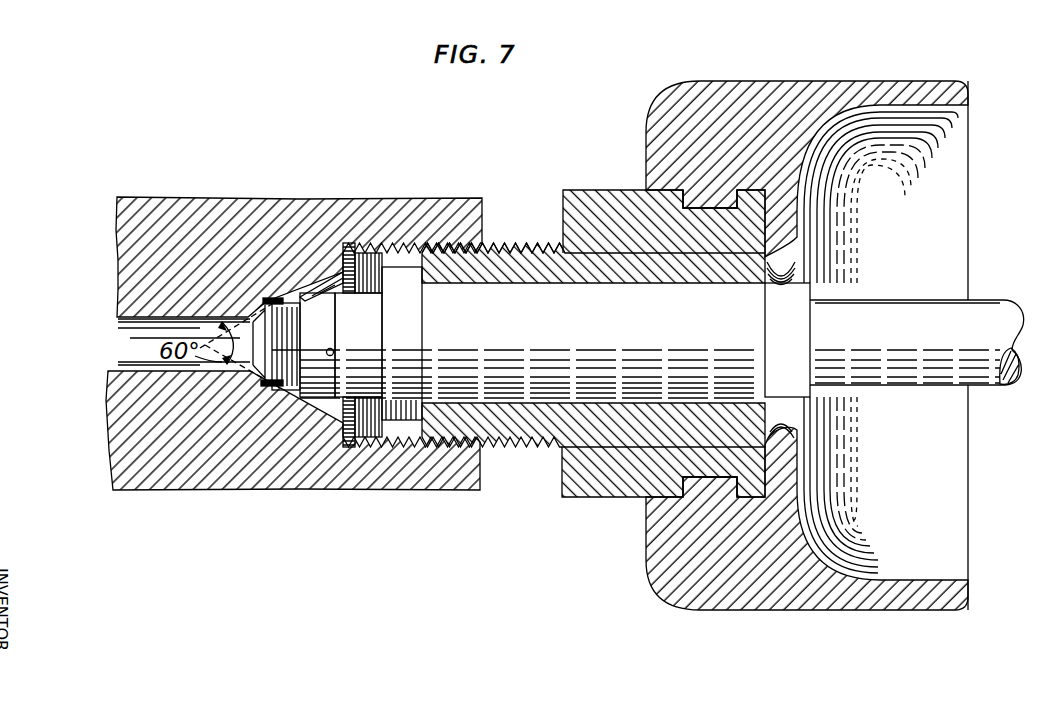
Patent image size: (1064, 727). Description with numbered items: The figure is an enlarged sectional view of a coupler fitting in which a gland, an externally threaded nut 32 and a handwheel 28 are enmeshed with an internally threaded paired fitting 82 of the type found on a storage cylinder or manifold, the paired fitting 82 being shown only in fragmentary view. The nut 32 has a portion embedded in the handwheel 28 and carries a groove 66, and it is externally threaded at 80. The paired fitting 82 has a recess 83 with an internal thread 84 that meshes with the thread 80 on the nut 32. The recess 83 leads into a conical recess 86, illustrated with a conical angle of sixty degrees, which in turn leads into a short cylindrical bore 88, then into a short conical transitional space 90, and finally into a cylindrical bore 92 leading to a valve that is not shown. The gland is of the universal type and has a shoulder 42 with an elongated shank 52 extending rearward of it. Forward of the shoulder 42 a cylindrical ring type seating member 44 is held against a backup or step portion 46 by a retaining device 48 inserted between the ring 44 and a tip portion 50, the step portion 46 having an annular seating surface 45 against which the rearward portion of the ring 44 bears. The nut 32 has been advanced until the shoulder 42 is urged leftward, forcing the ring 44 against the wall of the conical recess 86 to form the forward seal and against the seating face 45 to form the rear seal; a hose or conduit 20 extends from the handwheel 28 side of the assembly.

The cable 20 is at (998, 312).
The handwheel 28 is at (850, 88).
The nut 32 is at (608, 190).
The shoulder 42 is at (413, 314).
The ring 44 is at (335, 336).
The seating surface 45 is at (334, 352).
The step portion 46 is at (350, 382).
The retaining device 48 is at (294, 334).
The tip portion 50 is at (273, 392).
The shank 52 is at (534, 372).
The groove 66 is at (712, 206).
The external thread 80 is at (520, 246).
The paired fitting 82 is at (243, 193).
The recess 83 is at (425, 246).
The internal thread 84 is at (388, 241).
The conical recess 86 is at (330, 275).
The cylindrical bore 88 is at (268, 297).
The conical transitional space 90 is at (255, 382).
The cylindrical bore 92 is at (107, 369).